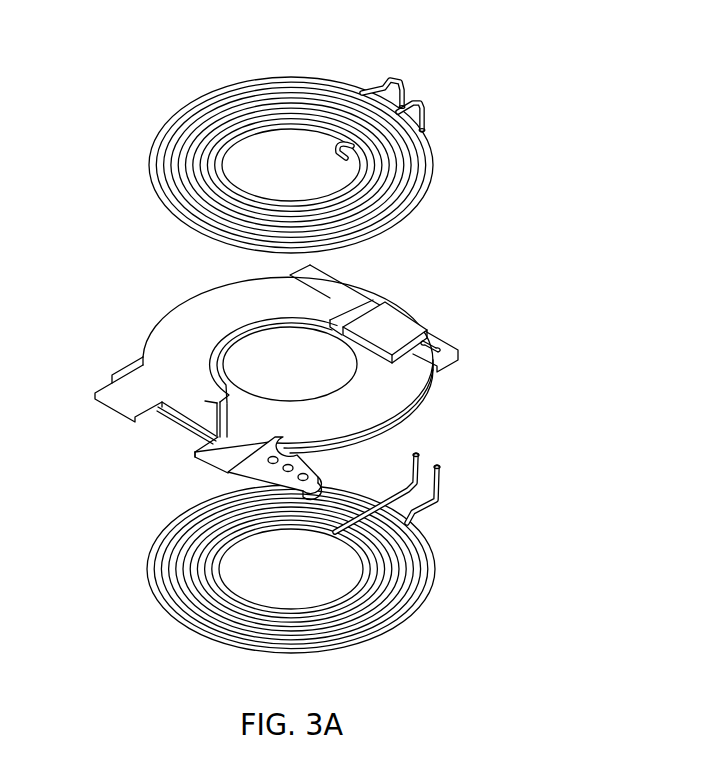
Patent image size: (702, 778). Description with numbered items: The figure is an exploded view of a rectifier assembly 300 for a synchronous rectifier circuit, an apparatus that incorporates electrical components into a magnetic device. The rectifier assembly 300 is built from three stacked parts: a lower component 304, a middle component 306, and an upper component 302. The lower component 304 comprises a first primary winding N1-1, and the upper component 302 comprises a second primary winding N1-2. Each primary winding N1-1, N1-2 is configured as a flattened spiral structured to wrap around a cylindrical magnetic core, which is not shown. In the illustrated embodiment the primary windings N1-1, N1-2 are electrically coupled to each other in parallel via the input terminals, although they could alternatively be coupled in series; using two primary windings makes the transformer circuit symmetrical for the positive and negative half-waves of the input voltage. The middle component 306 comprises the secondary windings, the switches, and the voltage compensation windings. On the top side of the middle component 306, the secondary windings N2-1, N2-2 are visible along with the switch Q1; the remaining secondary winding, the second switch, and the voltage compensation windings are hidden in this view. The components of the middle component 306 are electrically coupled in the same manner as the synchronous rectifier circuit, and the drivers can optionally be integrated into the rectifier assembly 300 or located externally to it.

The rectifier assembly 300 is at (543, 32).
The upper component 302 is at (269, 154).
The lower component 304 is at (280, 539).
The middle component 306 is at (312, 382).
The second primary winding N1-2 is at (175, 180).
The first primary winding N1-1 is at (173, 583).
The secondary winding N2-2 is at (190, 327).
The secondary winding N2-1 is at (373, 413).
The switch Q1 is at (383, 317).